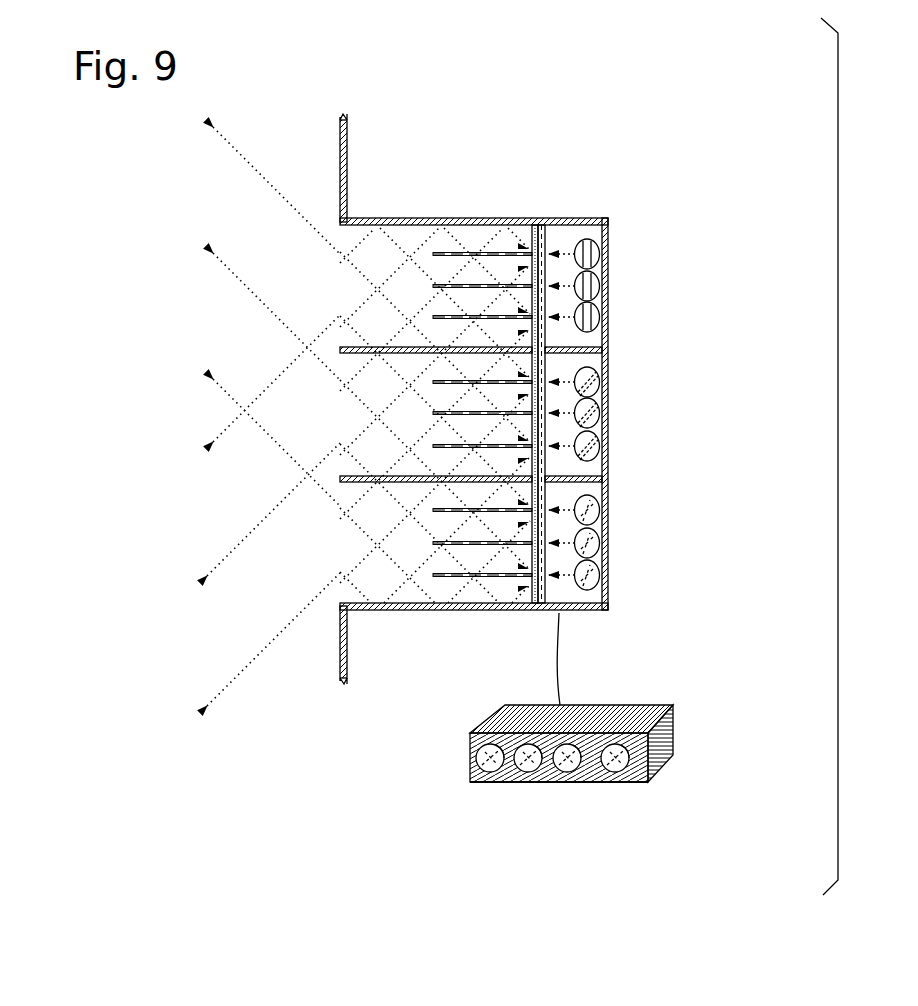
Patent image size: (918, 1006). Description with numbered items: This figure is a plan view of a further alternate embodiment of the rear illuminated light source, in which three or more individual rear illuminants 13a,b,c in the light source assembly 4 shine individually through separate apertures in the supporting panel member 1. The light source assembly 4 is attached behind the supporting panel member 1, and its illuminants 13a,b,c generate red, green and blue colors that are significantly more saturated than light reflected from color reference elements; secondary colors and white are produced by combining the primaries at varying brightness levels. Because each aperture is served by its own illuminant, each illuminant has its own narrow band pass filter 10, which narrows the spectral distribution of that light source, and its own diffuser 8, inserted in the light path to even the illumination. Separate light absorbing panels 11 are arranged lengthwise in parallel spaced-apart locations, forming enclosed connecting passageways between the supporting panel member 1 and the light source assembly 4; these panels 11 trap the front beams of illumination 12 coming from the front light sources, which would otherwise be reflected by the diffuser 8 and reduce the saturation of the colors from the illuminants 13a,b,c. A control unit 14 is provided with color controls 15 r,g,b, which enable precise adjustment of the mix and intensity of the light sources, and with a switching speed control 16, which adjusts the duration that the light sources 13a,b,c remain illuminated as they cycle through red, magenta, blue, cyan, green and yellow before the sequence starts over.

The supporting panel member 1 is at (334, 146).
The rear illuminated light source assembly 4 is at (499, 214).
The diffuser 8 is at (533, 612).
The narrow band pass filter 10 is at (550, 338).
The light absorbing panels 11 is at (446, 537).
The beams of illumination 12 is at (228, 209).
The rear illuminants 13a,b,c is at (611, 287).
The control unit 14 is at (669, 766).
The color controls 15 r,g,b is at (567, 786).
The switching speed control 16 is at (612, 787).